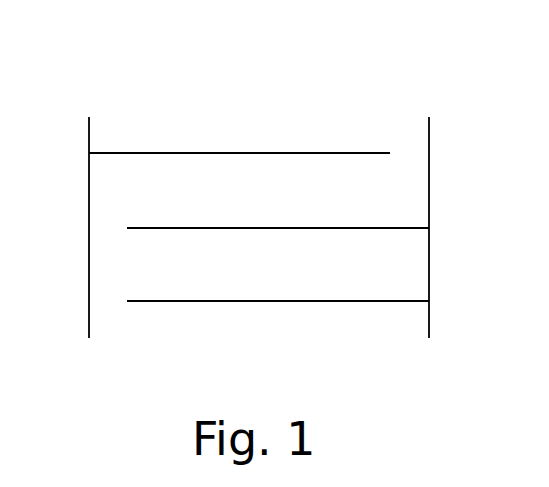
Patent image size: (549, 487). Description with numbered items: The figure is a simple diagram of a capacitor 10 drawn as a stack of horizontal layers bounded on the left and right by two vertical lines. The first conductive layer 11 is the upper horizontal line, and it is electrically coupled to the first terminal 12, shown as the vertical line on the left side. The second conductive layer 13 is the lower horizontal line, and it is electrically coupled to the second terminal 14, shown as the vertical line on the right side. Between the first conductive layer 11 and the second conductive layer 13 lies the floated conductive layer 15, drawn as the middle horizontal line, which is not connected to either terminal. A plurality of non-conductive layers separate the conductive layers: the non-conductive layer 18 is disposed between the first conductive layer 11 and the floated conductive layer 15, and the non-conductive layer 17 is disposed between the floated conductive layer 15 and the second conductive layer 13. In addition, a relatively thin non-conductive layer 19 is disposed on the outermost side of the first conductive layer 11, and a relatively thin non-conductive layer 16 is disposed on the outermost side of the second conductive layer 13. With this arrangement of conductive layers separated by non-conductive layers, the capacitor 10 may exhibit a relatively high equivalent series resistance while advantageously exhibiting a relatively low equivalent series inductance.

The capacitor 10 is at (109, 57).
The first conductive layer 11 is at (315, 153).
The first terminal 12 is at (88, 135).
The second conductive layer 13 is at (315, 301).
The second terminal 14 is at (429, 135).
The floated conductive layer 15 is at (315, 228).
The non-conductive layer 16 is at (275, 350).
The non-conductive layer 17 is at (275, 275).
The non-conductive layer 18 is at (275, 201).
The non-conductive layer 19 is at (275, 126).